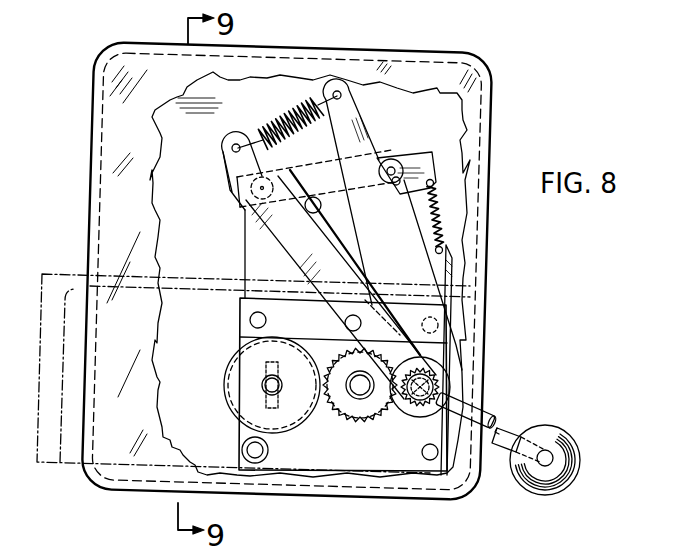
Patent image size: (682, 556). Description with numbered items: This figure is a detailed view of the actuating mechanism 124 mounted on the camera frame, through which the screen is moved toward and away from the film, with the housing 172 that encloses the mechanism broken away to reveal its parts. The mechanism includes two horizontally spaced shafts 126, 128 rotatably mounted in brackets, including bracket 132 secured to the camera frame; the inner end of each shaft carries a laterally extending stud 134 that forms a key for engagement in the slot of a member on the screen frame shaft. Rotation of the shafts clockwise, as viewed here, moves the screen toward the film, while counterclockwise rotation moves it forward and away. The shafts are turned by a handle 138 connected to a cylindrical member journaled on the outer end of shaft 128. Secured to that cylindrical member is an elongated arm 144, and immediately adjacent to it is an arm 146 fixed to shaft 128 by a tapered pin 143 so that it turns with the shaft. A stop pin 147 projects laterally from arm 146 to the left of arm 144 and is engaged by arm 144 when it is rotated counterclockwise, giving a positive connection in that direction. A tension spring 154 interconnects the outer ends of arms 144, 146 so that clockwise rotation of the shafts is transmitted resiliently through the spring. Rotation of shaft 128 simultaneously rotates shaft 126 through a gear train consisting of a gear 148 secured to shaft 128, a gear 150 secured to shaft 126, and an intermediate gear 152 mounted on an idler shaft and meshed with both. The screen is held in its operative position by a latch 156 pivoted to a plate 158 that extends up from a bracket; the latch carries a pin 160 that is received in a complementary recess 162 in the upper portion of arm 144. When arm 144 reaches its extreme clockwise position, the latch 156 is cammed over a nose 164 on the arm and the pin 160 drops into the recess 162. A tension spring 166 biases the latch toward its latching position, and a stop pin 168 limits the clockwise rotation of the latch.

The actuating mechanism 124 is at (415, 555).
The shaft 126 is at (314, 400).
The shaft 128 is at (423, 407).
The bracket 132 is at (240, 318).
The stud 134 is at (266, 364).
The handle 138 is at (516, 426).
The tapered pin 143 is at (470, 352).
The elongated arm 144 is at (462, 273).
The arm 146 is at (296, 248).
The stop pin 147 is at (350, 310).
The gear 148 is at (414, 408).
The gear 150 is at (238, 396).
The intermediate gear 152 is at (350, 420).
The tension spring 154 is at (282, 112).
The latch 156 is at (414, 152).
The plate 158 is at (250, 233).
The pin 160 is at (391, 158).
The recess 162 is at (393, 186).
The nose 164 is at (425, 154).
The tension spring 166 is at (447, 184).
The stop pin 168 is at (328, 252).
The housing 172 is at (246, 45).